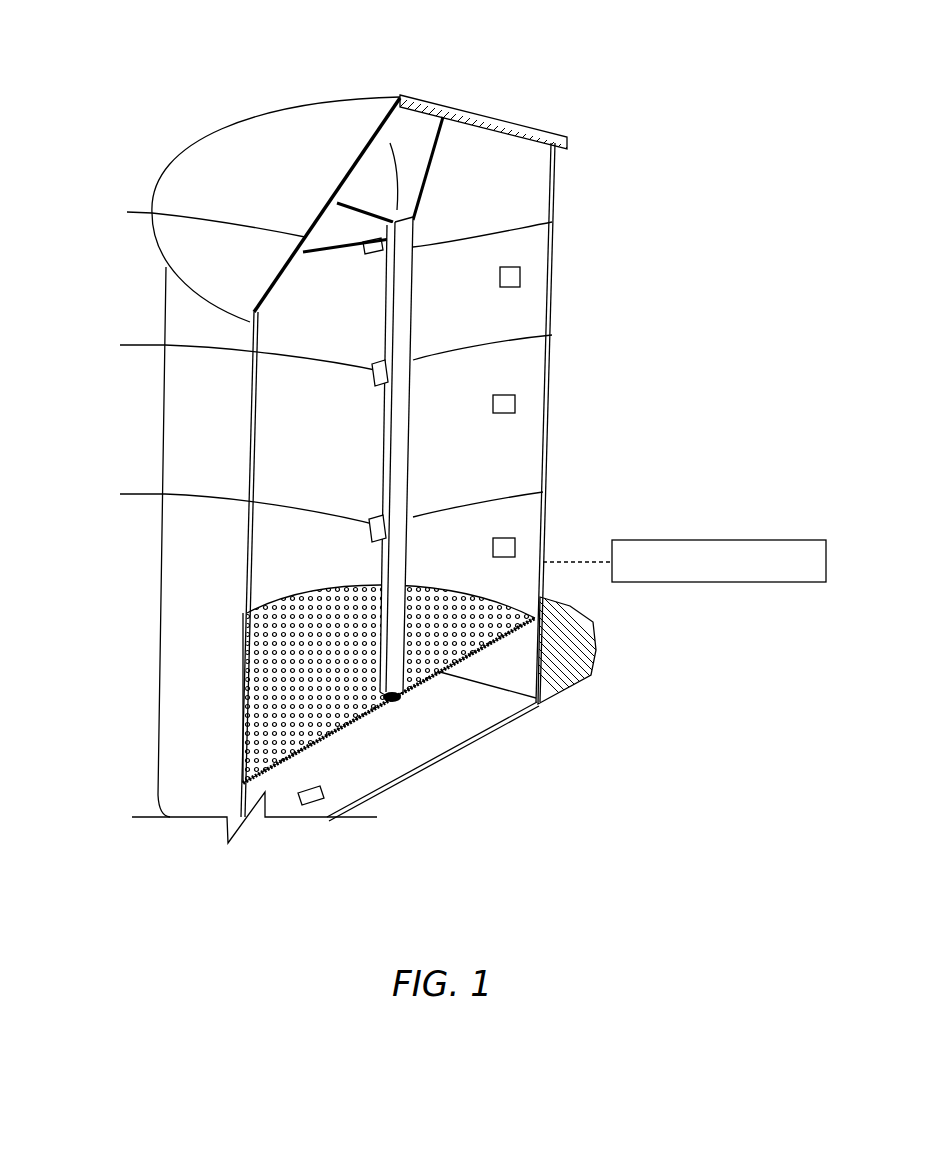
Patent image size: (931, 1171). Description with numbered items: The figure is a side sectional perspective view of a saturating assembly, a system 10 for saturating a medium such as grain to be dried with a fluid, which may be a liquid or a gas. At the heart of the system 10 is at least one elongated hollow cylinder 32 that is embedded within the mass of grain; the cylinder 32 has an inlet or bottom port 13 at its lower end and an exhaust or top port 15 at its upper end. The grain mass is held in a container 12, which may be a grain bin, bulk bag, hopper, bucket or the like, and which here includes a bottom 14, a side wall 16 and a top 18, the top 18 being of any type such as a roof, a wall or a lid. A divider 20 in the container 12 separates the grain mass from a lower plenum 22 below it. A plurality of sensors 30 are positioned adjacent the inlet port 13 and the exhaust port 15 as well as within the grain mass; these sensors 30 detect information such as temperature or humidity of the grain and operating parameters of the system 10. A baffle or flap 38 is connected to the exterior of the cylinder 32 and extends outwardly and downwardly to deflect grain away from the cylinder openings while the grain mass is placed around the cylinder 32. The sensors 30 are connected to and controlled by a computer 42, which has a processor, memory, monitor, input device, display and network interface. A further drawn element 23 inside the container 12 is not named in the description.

The system 10 is at (690, 259).
The container 12 is at (586, 168).
The inlet or bottom port 13 is at (397, 703).
The bottom 14 is at (467, 727).
The exhaust or top port 15 is at (400, 98).
The side wall 16 is at (548, 447).
The top 18 is at (292, 123).
The divider 20 is at (498, 645).
The lower plenum 22 is at (407, 757).
The interior chamber 23 is at (320, 476).
The sensors 30 is at (520, 275).
The elongated hollow cylinder 32 is at (552, 222).
The baffle or flap 38 is at (552, 335).
The computer 42 is at (797, 540).